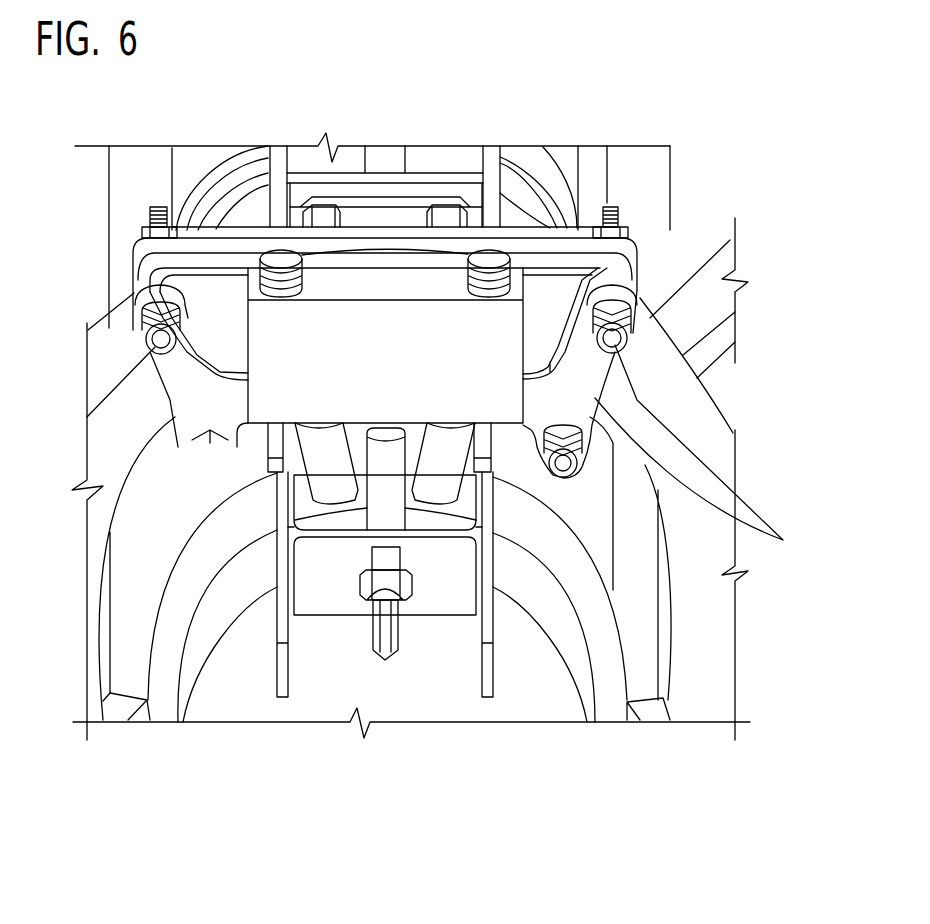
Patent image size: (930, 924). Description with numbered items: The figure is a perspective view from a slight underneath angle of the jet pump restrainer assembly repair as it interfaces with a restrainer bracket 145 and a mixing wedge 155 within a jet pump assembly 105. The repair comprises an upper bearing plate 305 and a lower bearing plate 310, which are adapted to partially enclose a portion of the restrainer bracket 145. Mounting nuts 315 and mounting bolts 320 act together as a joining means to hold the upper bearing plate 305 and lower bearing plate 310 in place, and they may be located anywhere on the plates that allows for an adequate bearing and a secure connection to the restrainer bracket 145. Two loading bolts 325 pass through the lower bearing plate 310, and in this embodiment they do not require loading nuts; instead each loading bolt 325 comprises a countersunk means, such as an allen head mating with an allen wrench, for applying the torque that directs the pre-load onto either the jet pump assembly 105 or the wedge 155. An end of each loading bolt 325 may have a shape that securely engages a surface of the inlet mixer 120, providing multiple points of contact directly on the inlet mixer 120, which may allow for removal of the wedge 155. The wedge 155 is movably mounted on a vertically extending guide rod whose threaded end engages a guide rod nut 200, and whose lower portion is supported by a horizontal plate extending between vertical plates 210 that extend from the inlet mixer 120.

The jet pump assembly 105 is at (593, 637).
The inlet mixer 120 is at (600, 173).
The restrainer bracket 145 is at (713, 453).
The wedge 155 is at (377, 223).
The guide rod nut 200 is at (370, 562).
The vertical plates 210 is at (277, 665).
The upper bearing plate 305 is at (385, 351).
The lower bearing plate 310 is at (341, 392).
The mounting nuts 315 is at (141, 226).
The mounting bolts 320 is at (147, 347).
The loading bolts 325 is at (468, 268).